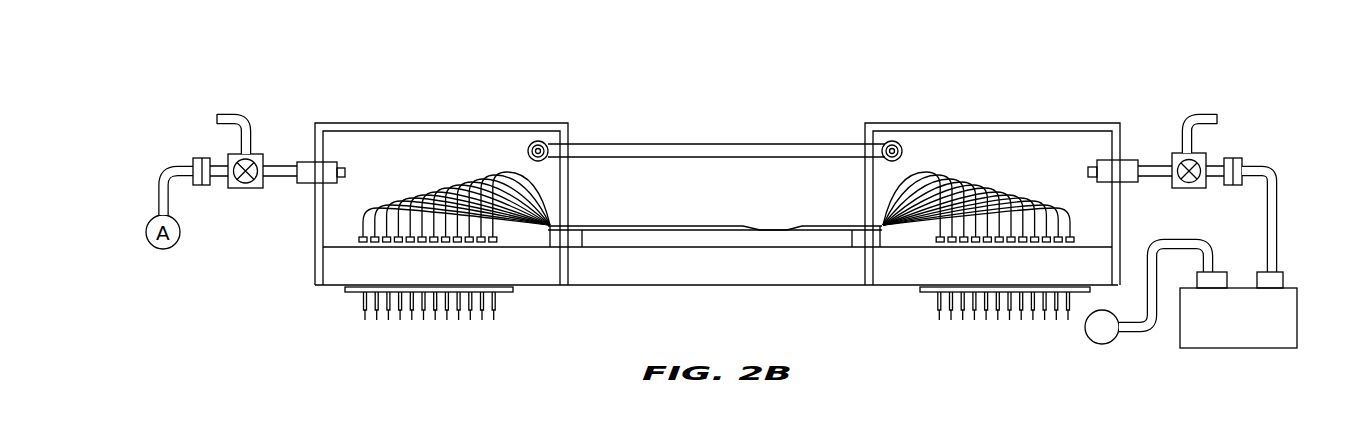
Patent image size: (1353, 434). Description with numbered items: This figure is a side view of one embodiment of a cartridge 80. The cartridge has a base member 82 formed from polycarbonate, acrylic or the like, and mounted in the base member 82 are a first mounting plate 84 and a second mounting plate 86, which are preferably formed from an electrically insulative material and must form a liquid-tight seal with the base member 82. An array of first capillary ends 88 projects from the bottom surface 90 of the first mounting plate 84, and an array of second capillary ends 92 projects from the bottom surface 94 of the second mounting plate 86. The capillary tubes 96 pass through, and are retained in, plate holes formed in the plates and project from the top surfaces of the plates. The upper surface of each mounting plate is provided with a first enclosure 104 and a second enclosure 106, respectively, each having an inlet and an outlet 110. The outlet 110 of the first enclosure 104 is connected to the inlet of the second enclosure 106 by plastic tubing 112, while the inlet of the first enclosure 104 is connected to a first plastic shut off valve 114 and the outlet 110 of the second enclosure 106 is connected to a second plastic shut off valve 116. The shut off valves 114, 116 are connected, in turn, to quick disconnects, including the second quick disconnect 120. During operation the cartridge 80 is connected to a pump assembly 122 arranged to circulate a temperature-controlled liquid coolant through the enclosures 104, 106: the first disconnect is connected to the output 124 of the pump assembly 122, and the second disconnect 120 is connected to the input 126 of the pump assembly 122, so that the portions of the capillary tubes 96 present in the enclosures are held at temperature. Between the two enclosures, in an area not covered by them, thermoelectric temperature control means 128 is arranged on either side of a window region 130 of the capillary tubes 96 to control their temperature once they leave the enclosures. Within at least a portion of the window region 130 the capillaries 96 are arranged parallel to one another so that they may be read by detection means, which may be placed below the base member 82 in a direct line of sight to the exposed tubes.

The cartridge 80 is at (663, 299).
The base member 82 is at (627, 280).
The first mounting plate 84 is at (353, 298).
The second mounting plate 86 is at (923, 298).
The first capillary ends 88 is at (493, 320).
The bottom surface of the first mounting plate 90 is at (503, 292).
The second capillary ends 92 is at (951, 320).
The bottom surface of the second mounting plate 94 is at (1082, 292).
The capillary tubes 96 is at (473, 182).
The first enclosure 104 is at (375, 123).
The second enclosure 106 is at (897, 123).
The outlet 110 is at (1132, 160).
The plastic tubing 112 is at (678, 144).
The first plastic shut off valve 114 is at (254, 154).
The second plastic shut off valve 116 is at (1178, 153).
The second quick disconnect 120 is at (196, 158).
The pump assembly 122 is at (1252, 331).
The output of the pump assembly 124 is at (1216, 262).
The input of the pump assembly 126 is at (1281, 262).
The thermoelectric temperature control means 128 is at (610, 226).
The window region 130 is at (773, 218).